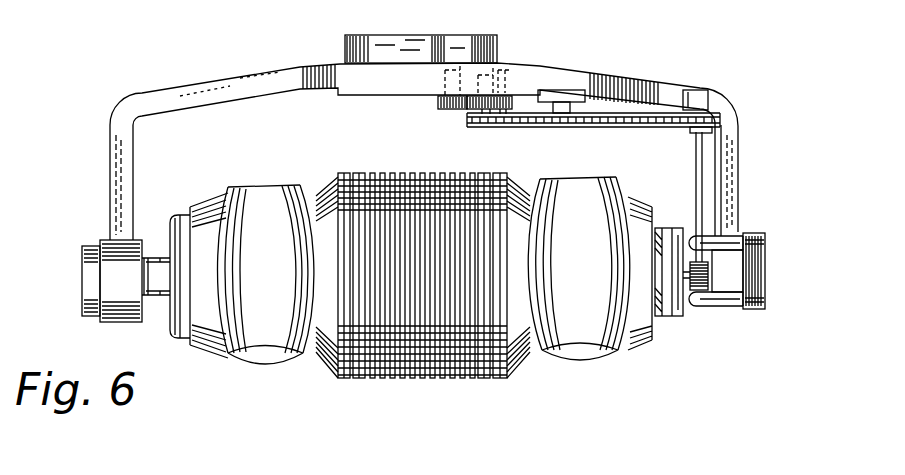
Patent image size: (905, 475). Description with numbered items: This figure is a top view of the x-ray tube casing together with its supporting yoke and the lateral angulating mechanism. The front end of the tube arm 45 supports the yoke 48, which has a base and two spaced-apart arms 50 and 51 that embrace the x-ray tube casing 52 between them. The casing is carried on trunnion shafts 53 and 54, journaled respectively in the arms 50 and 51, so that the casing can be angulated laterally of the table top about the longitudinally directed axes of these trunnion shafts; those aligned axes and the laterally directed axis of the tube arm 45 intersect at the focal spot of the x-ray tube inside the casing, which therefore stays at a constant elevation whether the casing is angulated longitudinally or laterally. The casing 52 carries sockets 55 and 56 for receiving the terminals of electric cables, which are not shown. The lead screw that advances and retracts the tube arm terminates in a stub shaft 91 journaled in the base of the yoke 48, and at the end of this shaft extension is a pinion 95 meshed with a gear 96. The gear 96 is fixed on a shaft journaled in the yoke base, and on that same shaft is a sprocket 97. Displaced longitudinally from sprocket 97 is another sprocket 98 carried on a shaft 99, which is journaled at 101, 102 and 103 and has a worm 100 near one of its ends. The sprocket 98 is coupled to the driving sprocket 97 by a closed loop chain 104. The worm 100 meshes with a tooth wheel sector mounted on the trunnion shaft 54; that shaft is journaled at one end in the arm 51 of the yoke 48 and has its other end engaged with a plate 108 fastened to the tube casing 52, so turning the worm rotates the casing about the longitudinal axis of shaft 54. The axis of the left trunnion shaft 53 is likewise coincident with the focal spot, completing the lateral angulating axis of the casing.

The tube arm 45 is at (500, 42).
The yoke 48 is at (289, 56).
The yoke arm 50 is at (112, 134).
The yoke arm 51 is at (722, 134).
The x-ray tube casing 52 is at (411, 386).
The trunnion shaft 53 is at (160, 286).
The trunnion shaft 54 is at (681, 258).
The socket 55 is at (257, 190).
The socket 56 is at (584, 186).
The stub shaft 91 is at (445, 76).
The pinion 95 is at (440, 112).
The gear 96 is at (512, 100).
The sprocket 97 is at (500, 70).
The sprocket 98 is at (690, 130).
The shaft 99 is at (696, 156).
The worm 100 is at (708, 270).
The journal 101 is at (703, 92).
The journal 102 is at (708, 243).
The journal 103 is at (700, 302).
The closed loop chain 104 is at (514, 121).
The plate 108 is at (672, 318).